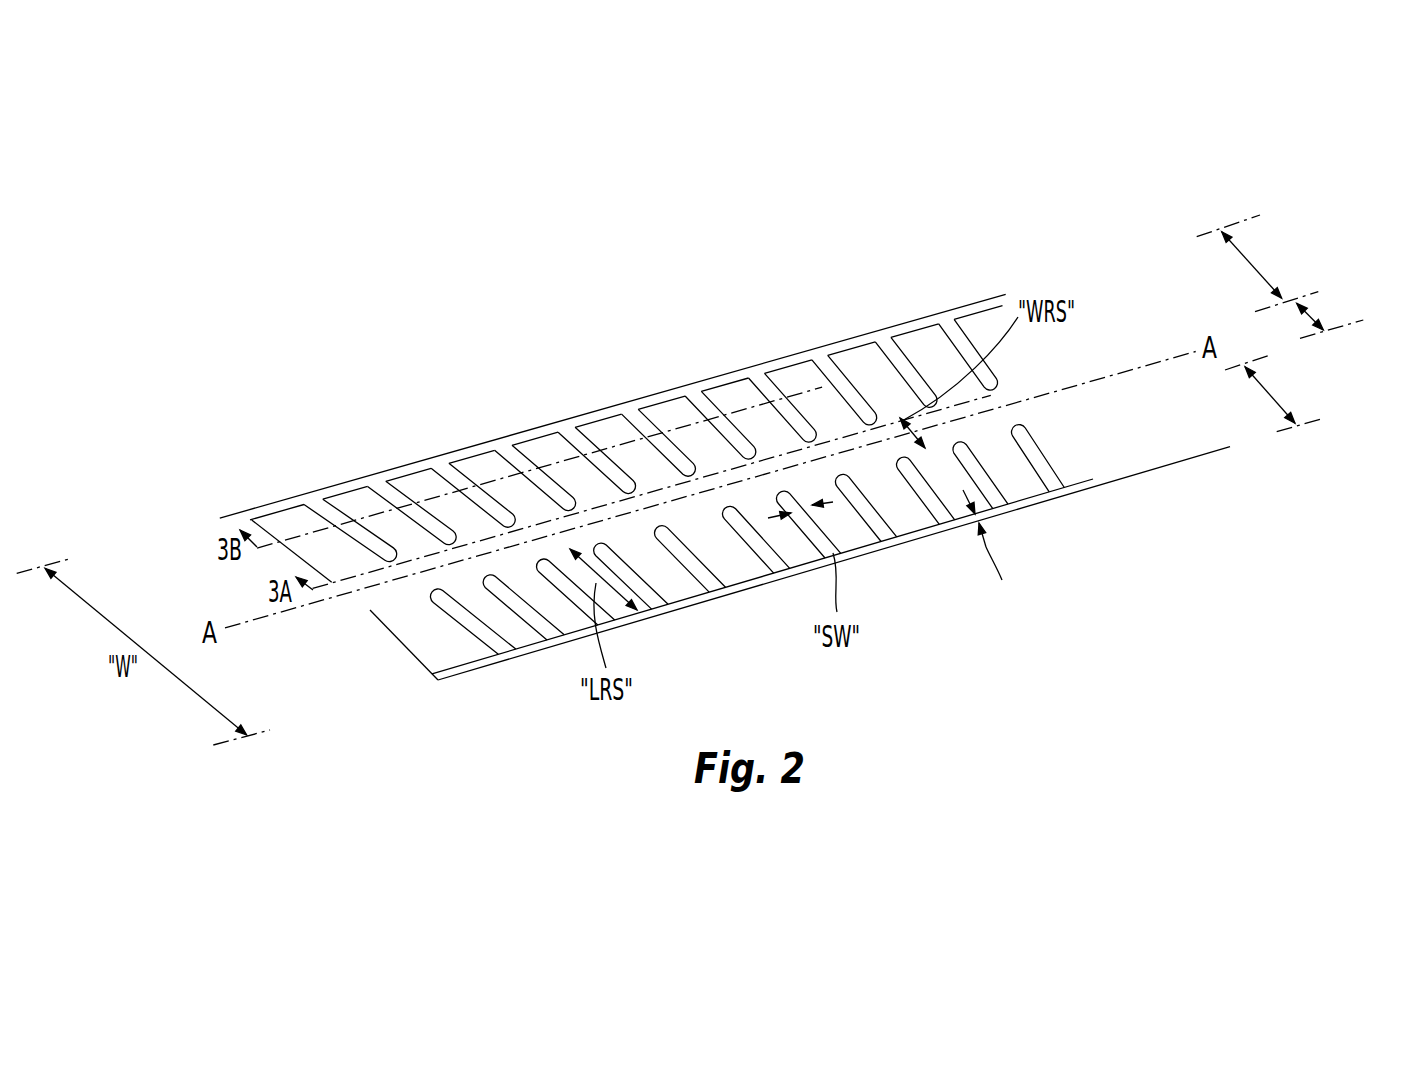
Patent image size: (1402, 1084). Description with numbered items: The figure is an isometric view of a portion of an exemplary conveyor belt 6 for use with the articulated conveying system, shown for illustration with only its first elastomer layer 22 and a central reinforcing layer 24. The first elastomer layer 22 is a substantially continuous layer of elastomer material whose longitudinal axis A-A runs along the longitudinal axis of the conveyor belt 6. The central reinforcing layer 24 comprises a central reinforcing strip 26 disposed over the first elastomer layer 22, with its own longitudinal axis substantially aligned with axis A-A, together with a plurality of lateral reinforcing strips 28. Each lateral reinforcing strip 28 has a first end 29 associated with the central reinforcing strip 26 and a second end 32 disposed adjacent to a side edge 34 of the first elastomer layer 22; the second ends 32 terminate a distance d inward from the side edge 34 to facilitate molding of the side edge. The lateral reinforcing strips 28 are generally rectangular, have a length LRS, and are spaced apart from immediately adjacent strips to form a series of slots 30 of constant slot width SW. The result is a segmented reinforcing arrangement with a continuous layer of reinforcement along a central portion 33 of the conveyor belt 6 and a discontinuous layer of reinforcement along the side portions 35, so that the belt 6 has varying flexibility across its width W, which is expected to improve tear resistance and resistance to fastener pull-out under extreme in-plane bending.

The conveyor belt 6 is at (680, 338).
The first elastomer layer 22 is at (1045, 499).
The central reinforcing layer 24 is at (1052, 438).
The central reinforcing strip 26 is at (997, 402).
The lateral reinforcing strips 28 is at (545, 452).
The first end 29 is at (630, 528).
The slots 30 is at (888, 353).
The second end 32 is at (704, 598).
The central portion 33 is at (1311, 318).
The side edge 34 is at (873, 560).
The side portions 35 is at (1252, 262).